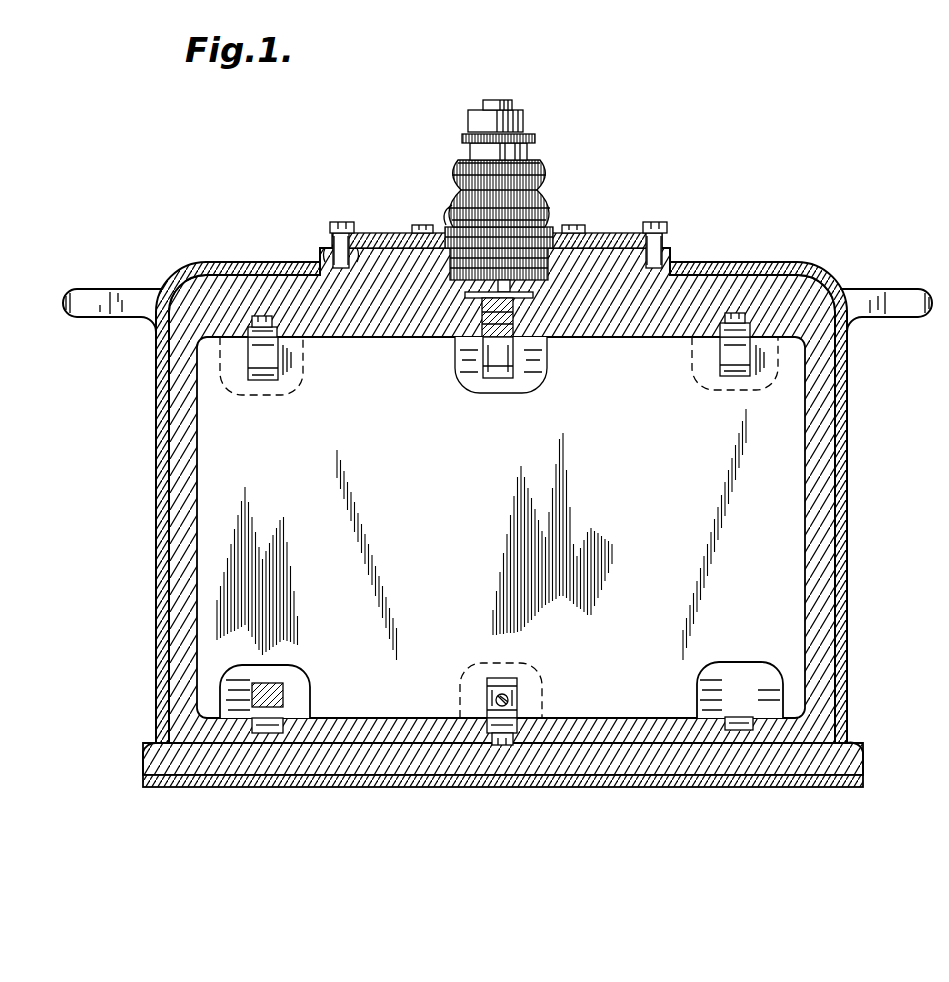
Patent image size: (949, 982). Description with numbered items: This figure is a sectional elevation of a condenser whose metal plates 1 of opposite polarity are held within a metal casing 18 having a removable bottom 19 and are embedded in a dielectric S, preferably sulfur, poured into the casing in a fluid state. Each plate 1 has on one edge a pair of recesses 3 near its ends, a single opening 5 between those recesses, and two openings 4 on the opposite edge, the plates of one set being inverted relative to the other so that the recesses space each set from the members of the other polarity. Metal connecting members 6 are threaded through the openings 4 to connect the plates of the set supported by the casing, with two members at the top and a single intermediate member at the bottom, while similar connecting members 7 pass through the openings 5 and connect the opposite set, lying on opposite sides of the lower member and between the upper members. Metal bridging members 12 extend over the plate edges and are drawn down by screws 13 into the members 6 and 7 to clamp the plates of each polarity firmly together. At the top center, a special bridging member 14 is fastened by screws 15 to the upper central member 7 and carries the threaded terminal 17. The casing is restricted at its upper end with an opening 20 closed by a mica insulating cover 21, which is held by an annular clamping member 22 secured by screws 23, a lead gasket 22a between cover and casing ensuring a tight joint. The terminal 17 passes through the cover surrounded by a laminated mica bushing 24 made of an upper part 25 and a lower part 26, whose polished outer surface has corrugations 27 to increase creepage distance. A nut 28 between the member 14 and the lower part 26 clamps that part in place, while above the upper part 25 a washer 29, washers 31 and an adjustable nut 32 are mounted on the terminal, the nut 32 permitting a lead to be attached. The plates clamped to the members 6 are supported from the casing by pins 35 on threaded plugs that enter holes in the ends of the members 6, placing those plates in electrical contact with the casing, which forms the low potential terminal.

The dielectric S is at (838, 548).
The metal plate 1 is at (481, 534).
The recess 3 is at (310, 690).
The opening 4 is at (255, 380).
The opening 5 is at (490, 678).
The connecting member 6 is at (278, 378).
The connecting member 7 is at (497, 370).
The bridging member 12 is at (270, 330).
The screw 13 is at (748, 318).
The bridging member 14 is at (480, 335).
The screw 15 is at (515, 300).
The terminal 17 is at (487, 100).
The casing 18 is at (840, 400).
The removable bottom 19 is at (372, 787).
The opening 20 is at (377, 232).
The insulating cover 21 is at (418, 225).
The annular clamping member 22 is at (330, 240).
The gasket 22a is at (668, 252).
The screw 23 is at (338, 222).
The bushing 24 is at (548, 178).
The upper bushing part 25 is at (550, 222).
The lower bushing part 26 is at (548, 290).
The corrugations 27 is at (452, 205).
The nut 28 is at (478, 290).
The washer 29 is at (545, 168).
The washer 31 is at (535, 137).
The nut 32 is at (518, 118).
The pin 35 is at (263, 362).